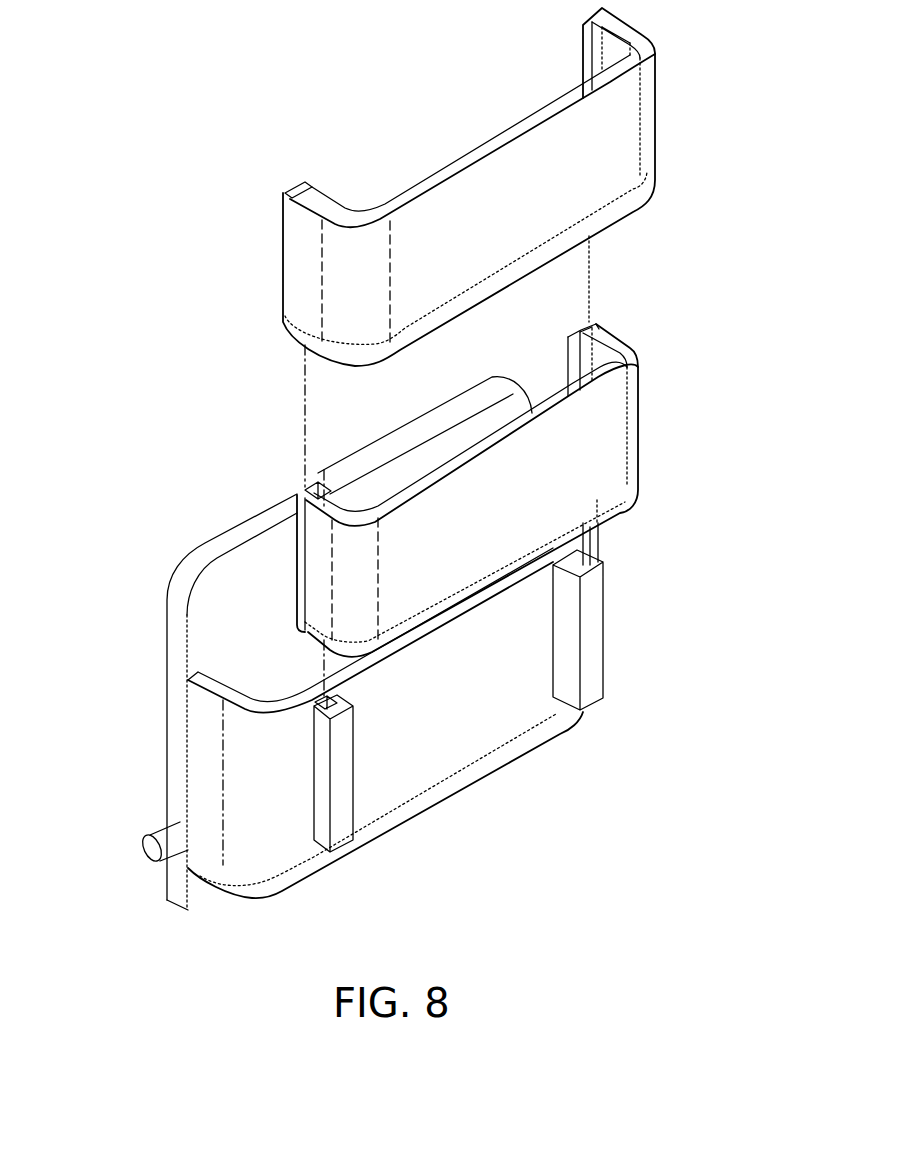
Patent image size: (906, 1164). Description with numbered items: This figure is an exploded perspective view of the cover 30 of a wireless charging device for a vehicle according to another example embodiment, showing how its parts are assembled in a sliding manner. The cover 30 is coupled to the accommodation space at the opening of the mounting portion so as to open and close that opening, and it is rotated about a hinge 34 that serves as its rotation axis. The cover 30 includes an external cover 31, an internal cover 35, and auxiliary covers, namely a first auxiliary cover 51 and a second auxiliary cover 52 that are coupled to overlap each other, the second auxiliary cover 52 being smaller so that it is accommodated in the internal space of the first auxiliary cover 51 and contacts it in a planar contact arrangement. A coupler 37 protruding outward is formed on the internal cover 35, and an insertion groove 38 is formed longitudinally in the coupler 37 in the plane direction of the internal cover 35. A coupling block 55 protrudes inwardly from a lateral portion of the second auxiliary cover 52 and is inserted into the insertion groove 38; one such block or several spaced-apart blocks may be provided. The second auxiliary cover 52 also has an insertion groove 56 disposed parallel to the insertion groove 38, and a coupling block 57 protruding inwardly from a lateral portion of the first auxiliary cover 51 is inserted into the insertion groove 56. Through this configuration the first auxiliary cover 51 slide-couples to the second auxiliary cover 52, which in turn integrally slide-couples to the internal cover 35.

The cover 30 is at (403, 643).
The external cover 31 is at (168, 675).
The hinge 34 is at (144, 850).
The internal cover 35 is at (200, 773).
The coupler 37 is at (347, 815).
The insertion groove 38 is at (347, 693).
The first auxiliary cover 51 is at (651, 137).
The second auxiliary cover 52 is at (622, 417).
The coupling block 55 is at (322, 472).
The insertion groove 56 is at (295, 502).
The coupling block 57 is at (305, 183).